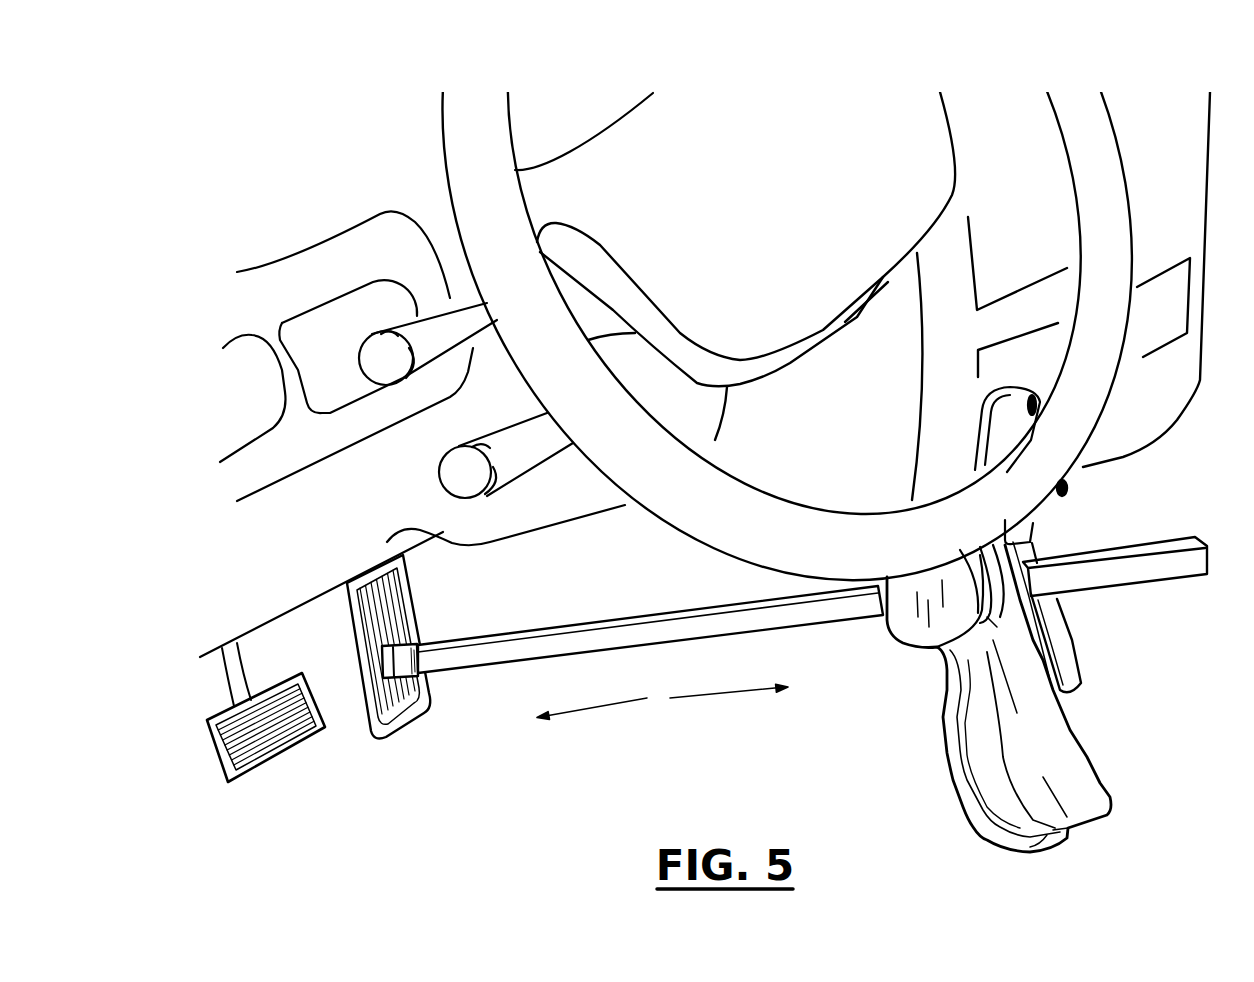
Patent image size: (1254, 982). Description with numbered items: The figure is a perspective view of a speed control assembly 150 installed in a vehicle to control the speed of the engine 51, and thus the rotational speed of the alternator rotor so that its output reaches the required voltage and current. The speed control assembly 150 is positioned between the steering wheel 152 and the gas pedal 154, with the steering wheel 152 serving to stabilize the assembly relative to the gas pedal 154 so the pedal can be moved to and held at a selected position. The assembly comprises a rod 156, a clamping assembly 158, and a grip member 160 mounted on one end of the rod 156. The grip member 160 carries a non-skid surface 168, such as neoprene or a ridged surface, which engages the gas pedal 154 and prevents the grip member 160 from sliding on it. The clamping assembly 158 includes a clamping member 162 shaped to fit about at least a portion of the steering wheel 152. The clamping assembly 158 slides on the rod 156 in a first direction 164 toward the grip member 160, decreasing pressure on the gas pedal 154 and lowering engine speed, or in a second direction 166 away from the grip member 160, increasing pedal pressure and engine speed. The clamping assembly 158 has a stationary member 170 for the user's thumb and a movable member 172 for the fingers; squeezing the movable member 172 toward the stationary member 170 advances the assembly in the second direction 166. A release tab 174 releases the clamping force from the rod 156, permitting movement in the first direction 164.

The engine 51 is at (260, 208).
The speed control assembly 150 is at (736, 691).
The steering wheel 152 is at (1103, 418).
The gas pedal 154 is at (368, 715).
The rod 156 is at (715, 604).
The clamping assembly 158 is at (1034, 691).
The grip member 160 is at (407, 643).
The clamping member 162 is at (977, 430).
The first direction 164 is at (608, 717).
The second direction 166 is at (727, 700).
The non-skid surface 168 is at (382, 665).
The stationary member 170 is at (1105, 812).
The movable member 172 is at (953, 790).
The release tab 174 is at (1073, 652).